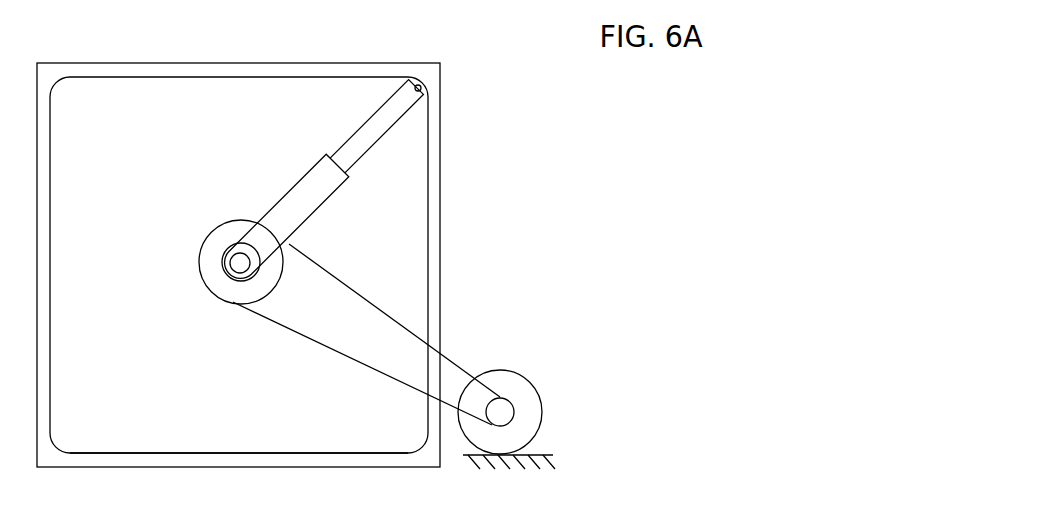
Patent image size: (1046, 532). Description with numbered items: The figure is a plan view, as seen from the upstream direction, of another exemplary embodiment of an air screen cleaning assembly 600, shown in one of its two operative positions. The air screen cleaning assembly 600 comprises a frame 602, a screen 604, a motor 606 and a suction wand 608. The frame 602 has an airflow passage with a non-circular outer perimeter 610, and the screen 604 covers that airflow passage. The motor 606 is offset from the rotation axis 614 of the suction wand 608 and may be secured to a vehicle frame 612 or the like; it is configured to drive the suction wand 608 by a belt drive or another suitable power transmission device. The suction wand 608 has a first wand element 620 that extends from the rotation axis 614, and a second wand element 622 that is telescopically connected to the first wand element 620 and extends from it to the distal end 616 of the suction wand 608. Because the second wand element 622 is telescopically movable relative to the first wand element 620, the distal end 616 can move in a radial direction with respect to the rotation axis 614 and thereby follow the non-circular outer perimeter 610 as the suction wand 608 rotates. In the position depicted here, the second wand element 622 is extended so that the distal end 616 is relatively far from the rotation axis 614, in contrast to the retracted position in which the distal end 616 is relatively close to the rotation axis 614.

The air screen cleaning assembly 600 is at (575, 216).
The frame 602 is at (183, 70).
The screen 604 is at (302, 113).
The motor 606 is at (523, 395).
The suction wand 608 is at (360, 179).
The non-circular outer perimeter 610 is at (143, 453).
The vehicle frame 612 is at (543, 461).
The rotation axis 614 is at (230, 266).
The distal end 616 is at (420, 86).
The first wand element 620 is at (323, 198).
The second wand element 622 is at (380, 132).